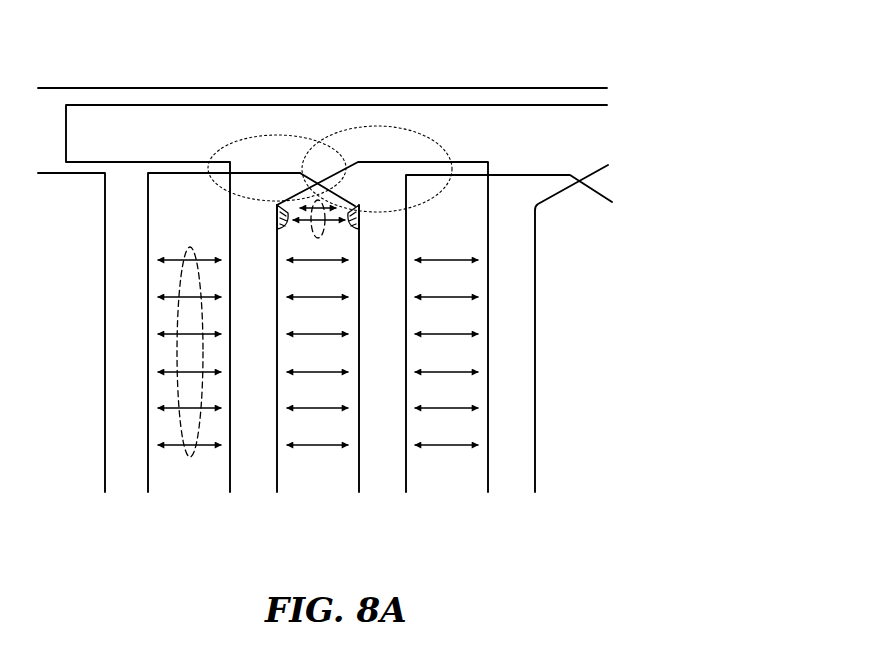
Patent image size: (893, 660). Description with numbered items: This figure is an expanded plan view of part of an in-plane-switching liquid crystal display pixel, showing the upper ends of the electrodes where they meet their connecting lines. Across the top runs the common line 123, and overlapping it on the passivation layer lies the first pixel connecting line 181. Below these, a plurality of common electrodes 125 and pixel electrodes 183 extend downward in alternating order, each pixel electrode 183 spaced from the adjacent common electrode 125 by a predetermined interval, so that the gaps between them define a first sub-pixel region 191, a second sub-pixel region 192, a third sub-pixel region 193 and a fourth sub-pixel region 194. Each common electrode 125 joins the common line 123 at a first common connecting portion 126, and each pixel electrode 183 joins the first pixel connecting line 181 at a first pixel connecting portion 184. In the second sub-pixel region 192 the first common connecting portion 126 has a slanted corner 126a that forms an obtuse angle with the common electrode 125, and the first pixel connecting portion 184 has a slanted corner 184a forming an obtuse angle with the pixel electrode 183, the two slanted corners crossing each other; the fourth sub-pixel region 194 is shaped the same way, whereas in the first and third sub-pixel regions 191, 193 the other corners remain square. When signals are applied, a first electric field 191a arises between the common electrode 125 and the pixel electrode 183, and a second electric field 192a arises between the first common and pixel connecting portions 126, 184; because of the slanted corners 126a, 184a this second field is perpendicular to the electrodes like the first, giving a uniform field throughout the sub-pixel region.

The common line 123 is at (405, 88).
The first pixel connecting line 181 is at (510, 105).
The first pixel connecting portion 184 is at (218, 148).
The slanted corner 184a is at (293, 197).
The first common connecting portion 126 is at (380, 127).
The slanted corner 126a is at (338, 195).
The common electrode 125 is at (105, 320).
The pixel electrode 183 is at (230, 392).
The first sub-pixel region 191 is at (196, 480).
The second sub-pixel region 192 is at (318, 481).
The third sub-pixel region 193 is at (446, 483).
The fourth sub-pixel region 194 is at (574, 482).
The first electric field 191a is at (178, 247).
The second electric field 192a is at (311, 236).